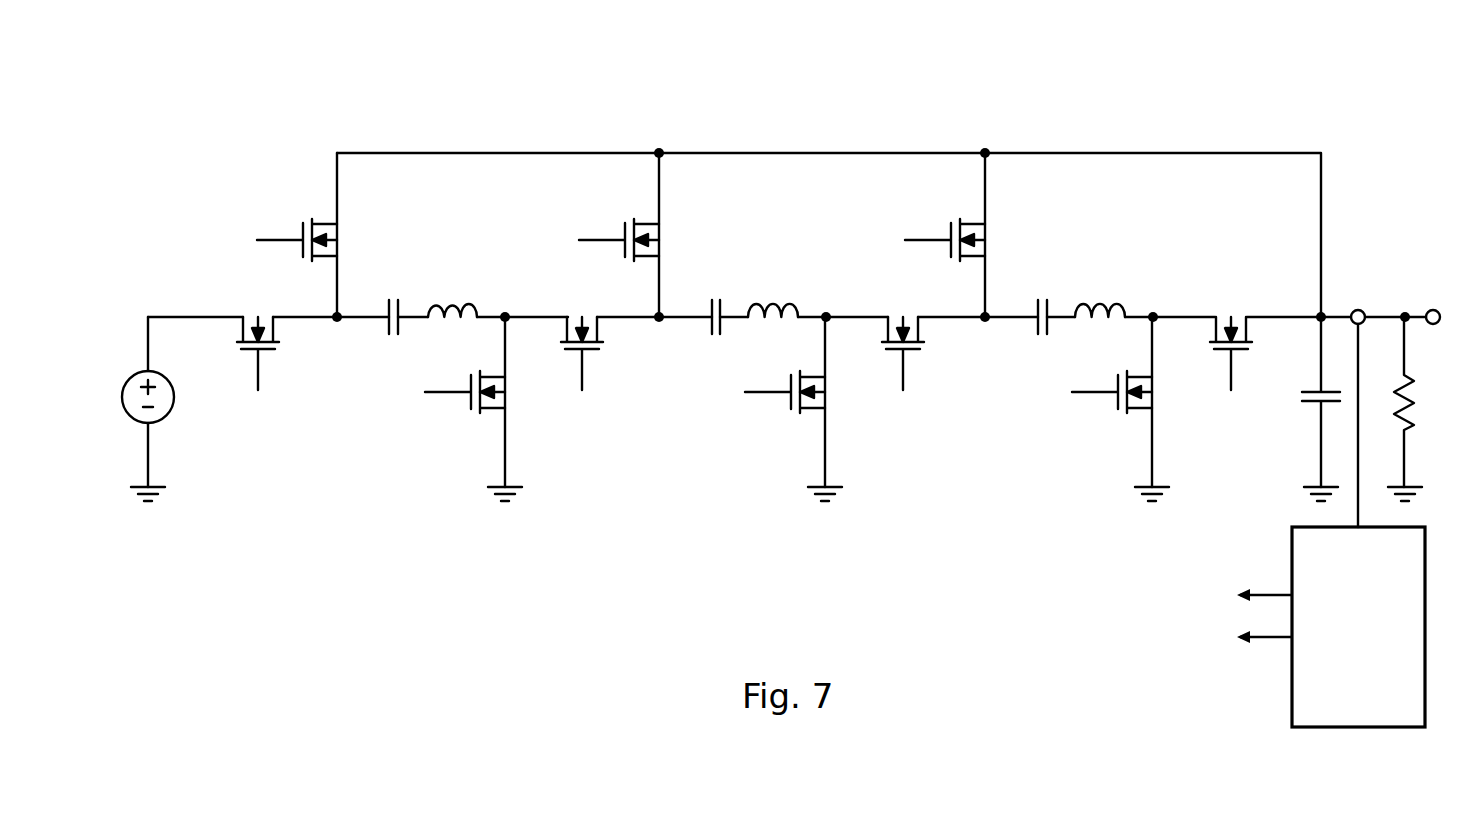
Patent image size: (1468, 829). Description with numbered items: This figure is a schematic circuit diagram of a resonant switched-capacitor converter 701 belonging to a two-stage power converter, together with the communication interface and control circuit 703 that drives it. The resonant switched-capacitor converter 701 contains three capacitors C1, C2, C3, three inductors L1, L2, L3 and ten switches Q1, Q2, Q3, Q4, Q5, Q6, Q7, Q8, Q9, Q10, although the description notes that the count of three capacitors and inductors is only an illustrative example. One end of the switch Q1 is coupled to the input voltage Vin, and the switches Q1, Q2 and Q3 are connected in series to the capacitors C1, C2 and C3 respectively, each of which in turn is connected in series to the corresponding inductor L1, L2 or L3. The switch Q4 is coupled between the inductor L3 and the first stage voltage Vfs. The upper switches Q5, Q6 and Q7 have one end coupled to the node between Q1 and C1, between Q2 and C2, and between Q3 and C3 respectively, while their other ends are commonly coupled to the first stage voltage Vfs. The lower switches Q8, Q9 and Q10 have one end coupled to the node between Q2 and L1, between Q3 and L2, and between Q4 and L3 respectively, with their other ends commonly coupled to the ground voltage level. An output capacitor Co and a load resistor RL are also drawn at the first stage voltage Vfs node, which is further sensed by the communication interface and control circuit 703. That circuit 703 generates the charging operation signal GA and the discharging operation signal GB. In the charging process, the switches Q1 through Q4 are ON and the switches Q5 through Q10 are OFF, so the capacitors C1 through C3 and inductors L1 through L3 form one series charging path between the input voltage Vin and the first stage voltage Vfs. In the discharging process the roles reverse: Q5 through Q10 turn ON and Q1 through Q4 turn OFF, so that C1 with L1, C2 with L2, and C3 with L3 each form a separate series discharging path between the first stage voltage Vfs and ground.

The resonant switched-capacitor converter 701 is at (766, 337).
The communication interface and control circuit 703 is at (1331, 627).
The input voltage Vin is at (129, 402).
The first stage voltage Vfs is at (1433, 299).
The switch Q1 is at (251, 369).
The switch Q2 is at (575, 369).
The switch Q3 is at (896, 369).
The switch Q4 is at (1224, 368).
The switch Q5 is at (280, 232).
The switch Q6 is at (601, 232).
The switch Q7 is at (926, 232).
The switch Q8 is at (445, 402).
The switch Q9 is at (767, 402).
The switch Q10 is at (1093, 402).
The capacitor C1 is at (398, 305).
The capacitor C2 is at (720, 305).
The capacitor C3 is at (1045, 305).
The inductor L1 is at (452, 296).
The inductor L2 is at (773, 296).
The inductor L3 is at (1100, 296).
The output capacitor Co is at (1301, 402).
The load resistor RL is at (1420, 402).